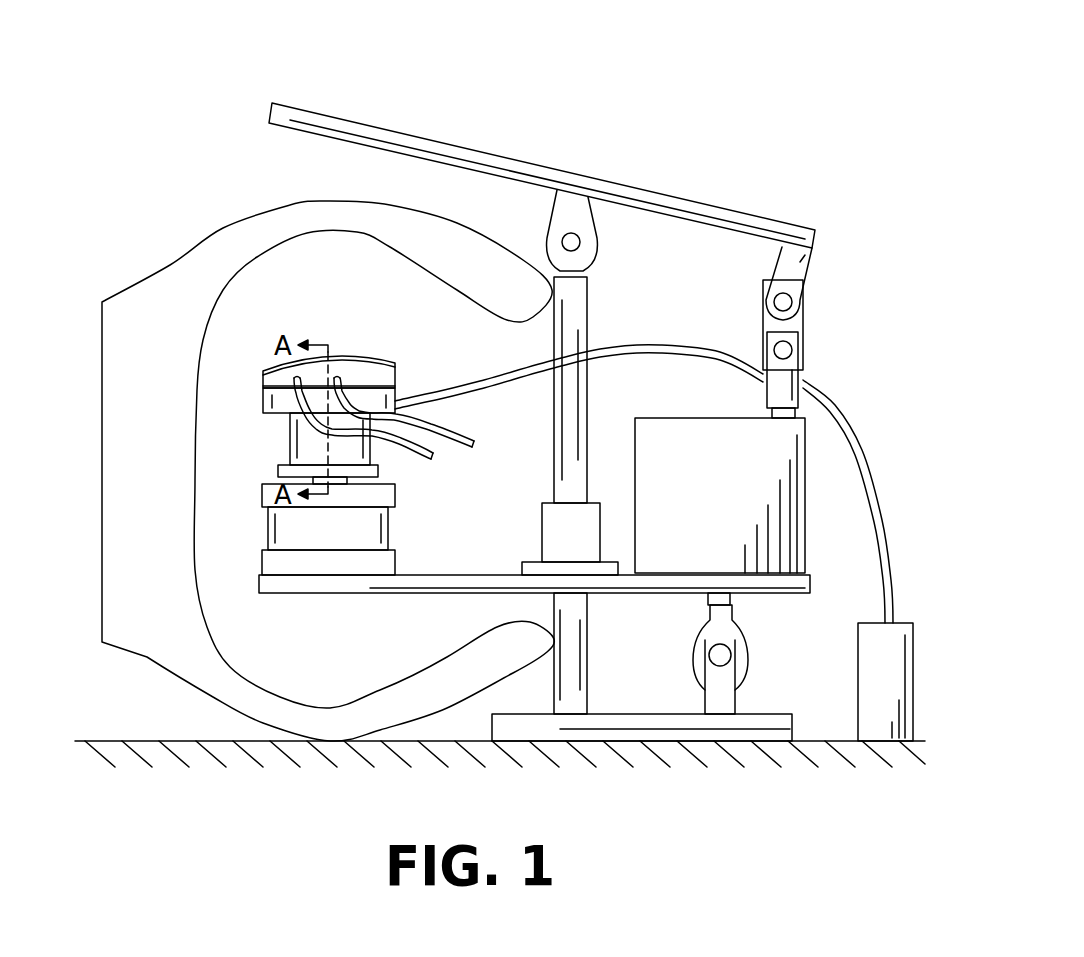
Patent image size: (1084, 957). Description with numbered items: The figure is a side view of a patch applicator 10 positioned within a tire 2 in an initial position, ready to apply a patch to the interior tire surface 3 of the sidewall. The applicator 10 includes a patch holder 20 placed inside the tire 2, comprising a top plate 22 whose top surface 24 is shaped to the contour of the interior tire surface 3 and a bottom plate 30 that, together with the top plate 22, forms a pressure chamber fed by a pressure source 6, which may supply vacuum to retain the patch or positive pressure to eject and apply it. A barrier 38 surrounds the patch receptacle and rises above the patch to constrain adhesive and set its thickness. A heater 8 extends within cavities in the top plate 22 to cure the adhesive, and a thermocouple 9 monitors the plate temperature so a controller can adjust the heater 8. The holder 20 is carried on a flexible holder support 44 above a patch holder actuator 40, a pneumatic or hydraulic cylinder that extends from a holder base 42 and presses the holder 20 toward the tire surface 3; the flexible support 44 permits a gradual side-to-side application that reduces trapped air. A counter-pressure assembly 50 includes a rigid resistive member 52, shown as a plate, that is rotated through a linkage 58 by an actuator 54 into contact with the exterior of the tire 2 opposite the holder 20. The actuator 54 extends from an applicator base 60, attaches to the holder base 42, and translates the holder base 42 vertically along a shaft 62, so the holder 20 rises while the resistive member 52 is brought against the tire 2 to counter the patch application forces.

The tire 2 is at (140, 290).
The interior tire surface 3 is at (313, 233).
The pressure source 6 is at (876, 686).
The heater 8 is at (455, 438).
The thermocouple 9 is at (430, 452).
The patch applicator 10 is at (678, 76).
The patch holder 20 is at (440, 367).
The top plate 22 is at (392, 362).
The top surface 24 is at (275, 372).
The bottom plate 30 is at (263, 402).
The barrier 38 is at (350, 352).
The patch holder actuator 40 is at (388, 532).
The holder base 42 is at (350, 592).
The flexible holder support 44 is at (290, 452).
The counter-pressure assembly 50 is at (866, 221).
The resistive member 52 is at (452, 155).
The actuator 54 is at (703, 519).
The linkage 58 is at (803, 322).
The applicator base 60 is at (775, 713).
The shaft 62 is at (587, 638).